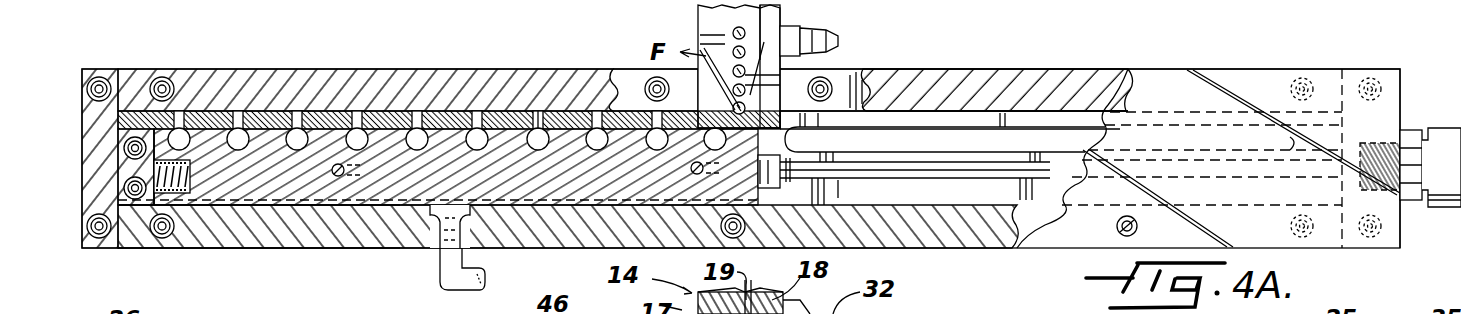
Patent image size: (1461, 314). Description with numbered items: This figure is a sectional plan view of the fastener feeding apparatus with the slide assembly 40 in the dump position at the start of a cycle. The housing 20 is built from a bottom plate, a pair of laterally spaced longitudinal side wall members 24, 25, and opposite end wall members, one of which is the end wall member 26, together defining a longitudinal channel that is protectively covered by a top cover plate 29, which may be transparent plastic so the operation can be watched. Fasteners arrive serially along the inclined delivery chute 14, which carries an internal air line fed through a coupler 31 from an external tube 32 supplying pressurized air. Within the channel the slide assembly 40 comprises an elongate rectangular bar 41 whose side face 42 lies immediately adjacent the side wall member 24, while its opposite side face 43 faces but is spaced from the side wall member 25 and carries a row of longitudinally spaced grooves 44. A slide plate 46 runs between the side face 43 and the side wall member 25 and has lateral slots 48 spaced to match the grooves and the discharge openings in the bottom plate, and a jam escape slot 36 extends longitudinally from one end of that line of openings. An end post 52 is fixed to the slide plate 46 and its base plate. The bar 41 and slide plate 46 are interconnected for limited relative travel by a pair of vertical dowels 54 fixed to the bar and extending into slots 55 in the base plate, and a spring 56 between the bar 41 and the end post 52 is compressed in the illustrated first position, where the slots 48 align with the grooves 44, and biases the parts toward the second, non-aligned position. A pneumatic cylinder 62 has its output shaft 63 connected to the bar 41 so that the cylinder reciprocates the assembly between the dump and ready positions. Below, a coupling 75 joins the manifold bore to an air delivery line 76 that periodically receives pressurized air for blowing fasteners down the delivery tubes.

The delivery chute 14 is at (696, 24).
The housing 20 is at (1322, 50).
The side wall member 24 is at (962, 244).
The side wall member 25 is at (484, 76).
The end wall member 26 is at (100, 68).
The top cover plate 29 is at (1190, 83).
The coupler 31 is at (790, 30).
The external tube 32 is at (842, 36).
The jam escape slot 36 is at (958, 134).
The slide assembly 40 is at (562, 135).
The elongate rectangular bar 41 is at (254, 198).
The side face 42 is at (316, 206).
The side face 43 is at (215, 128).
The grooves 44 is at (462, 128).
The slide plate 46 is at (268, 114).
The slots 48 is at (358, 112).
The end post 52 is at (135, 138).
The vertical dowels 54 is at (330, 172).
The slots 55 is at (345, 168).
The spring 56 is at (182, 194).
The pneumatic cylinder 62 is at (1440, 128).
The output shaft 63 is at (888, 165).
The coupling 75 is at (432, 218).
The air delivery line 76 is at (452, 290).